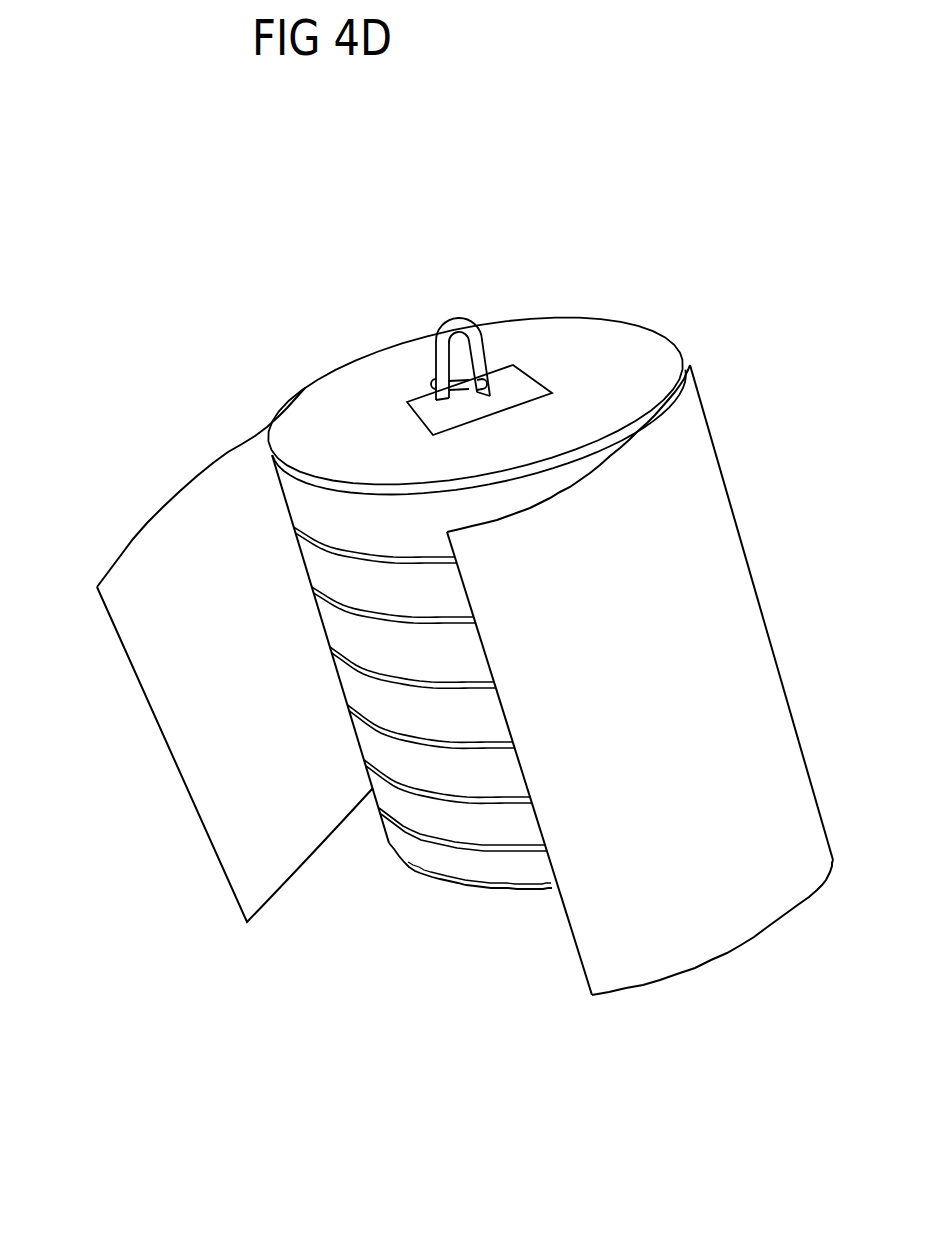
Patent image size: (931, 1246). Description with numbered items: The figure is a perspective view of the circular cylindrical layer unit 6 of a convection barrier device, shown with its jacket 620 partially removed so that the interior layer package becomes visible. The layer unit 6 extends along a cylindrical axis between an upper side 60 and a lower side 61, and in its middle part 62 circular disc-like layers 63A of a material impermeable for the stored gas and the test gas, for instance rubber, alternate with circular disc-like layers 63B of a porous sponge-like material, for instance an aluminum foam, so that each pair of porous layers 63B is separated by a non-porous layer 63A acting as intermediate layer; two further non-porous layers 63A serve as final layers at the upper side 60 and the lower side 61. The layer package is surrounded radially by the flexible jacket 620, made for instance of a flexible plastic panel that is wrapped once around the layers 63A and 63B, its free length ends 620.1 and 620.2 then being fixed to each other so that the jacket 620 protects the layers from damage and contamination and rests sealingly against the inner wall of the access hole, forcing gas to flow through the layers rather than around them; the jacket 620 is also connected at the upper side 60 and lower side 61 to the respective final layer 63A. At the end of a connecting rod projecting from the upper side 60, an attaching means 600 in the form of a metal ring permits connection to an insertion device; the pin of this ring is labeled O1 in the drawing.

The layer unit 6 is at (464, 262).
The upper side 60 is at (330, 398).
The layer of non-porous material 63A is at (385, 370).
The layer of porous material 63B is at (300, 500).
The attaching means 600 is at (517, 332).
The handle pin / pivot axis O1 is at (438, 378).
The lower side 61 is at (450, 913).
The middle part 62 is at (353, 780).
The jacket 620 is at (170, 557).
The free length end of the jacket 620.1 is at (217, 808).
The free length end of the jacket 620.2 is at (605, 907).